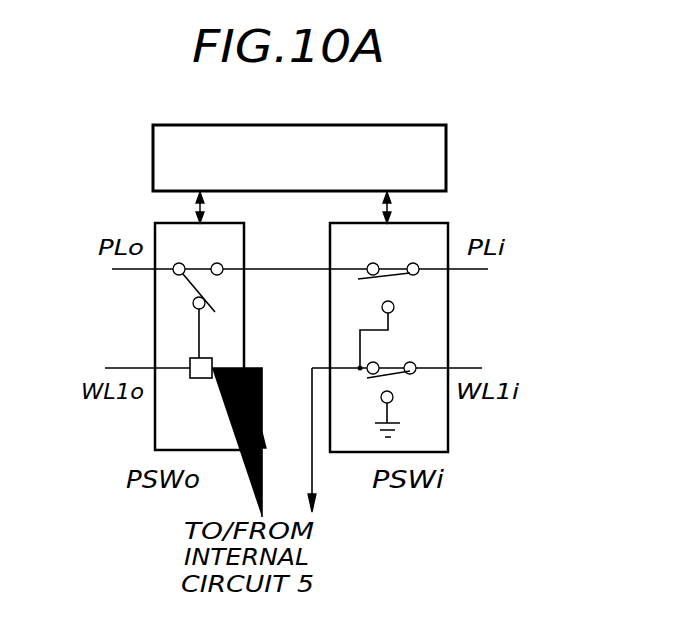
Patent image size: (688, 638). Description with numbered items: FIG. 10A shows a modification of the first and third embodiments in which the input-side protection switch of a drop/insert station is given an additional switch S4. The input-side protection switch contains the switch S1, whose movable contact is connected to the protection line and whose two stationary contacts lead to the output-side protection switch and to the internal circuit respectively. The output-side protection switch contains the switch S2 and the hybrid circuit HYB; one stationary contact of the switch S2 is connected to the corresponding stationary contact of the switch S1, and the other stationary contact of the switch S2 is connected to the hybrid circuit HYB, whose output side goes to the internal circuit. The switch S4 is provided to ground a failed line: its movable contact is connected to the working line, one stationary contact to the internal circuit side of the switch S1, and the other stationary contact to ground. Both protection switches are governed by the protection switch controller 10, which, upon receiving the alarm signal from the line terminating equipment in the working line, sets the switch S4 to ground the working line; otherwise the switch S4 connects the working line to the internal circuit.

The protection switch controller 10 is at (446, 125).
The switch S1 is at (362, 293).
The switch S2 is at (180, 289).
The switch S4 is at (400, 350).
The hybrid circuit HYB is at (201, 378).